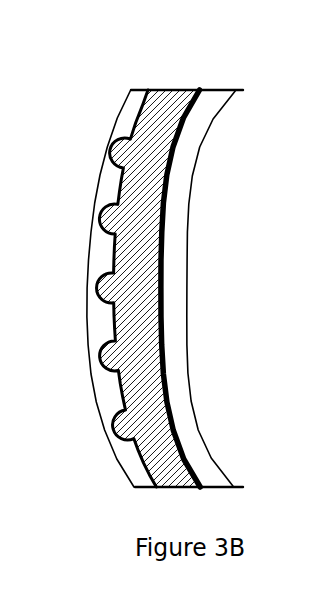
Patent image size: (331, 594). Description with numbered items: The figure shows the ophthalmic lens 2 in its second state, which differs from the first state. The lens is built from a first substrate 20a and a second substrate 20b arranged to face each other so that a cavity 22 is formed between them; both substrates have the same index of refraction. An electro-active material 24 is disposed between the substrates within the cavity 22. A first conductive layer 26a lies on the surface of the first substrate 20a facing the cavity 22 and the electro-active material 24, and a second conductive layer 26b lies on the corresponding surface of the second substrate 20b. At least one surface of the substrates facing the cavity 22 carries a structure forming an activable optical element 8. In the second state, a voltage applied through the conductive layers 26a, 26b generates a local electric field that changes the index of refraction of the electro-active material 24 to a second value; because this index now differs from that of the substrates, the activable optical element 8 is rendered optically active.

The ophthalmic lens 2 is at (105, 117).
The activable optical element 8 is at (103, 288).
The first substrate 20a is at (130, 103).
The second substrate 20b is at (205, 105).
The cavity 22 is at (152, 172).
The electro-active material 24 is at (135, 220).
The first conductive layer 26a is at (123, 383).
The second conductive layer 26b is at (173, 420).